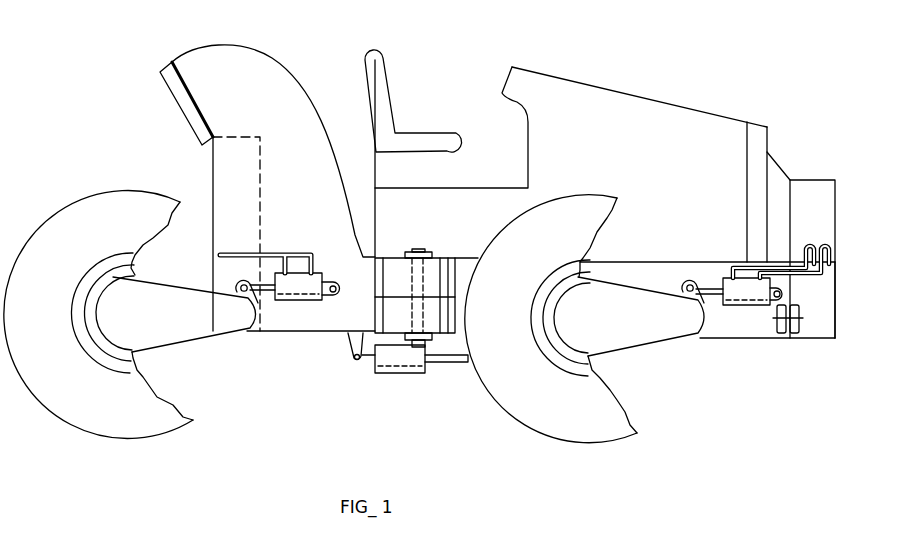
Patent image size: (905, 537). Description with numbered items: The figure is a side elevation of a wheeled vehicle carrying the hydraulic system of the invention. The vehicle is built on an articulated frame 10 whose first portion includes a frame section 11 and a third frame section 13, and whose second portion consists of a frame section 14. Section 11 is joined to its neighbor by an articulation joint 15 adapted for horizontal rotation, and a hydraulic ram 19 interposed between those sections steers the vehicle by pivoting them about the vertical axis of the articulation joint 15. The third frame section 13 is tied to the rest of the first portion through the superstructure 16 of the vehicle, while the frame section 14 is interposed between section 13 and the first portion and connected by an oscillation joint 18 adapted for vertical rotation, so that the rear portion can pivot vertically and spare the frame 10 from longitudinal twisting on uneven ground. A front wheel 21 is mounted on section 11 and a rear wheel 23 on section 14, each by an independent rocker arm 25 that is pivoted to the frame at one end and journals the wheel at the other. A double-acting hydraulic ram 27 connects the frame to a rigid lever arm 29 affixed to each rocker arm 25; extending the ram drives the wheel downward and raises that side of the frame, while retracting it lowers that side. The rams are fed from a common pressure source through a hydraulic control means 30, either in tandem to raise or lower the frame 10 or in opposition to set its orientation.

The articulated frame 10 is at (356, 374).
The frame section 11 is at (300, 335).
The third frame section 13 is at (817, 330).
The frame section 14 is at (705, 330).
The articulation joint 15 is at (407, 252).
The superstructure 16 is at (263, 68).
The oscillation joint 18 is at (772, 340).
The hydraulic ram 19 is at (418, 373).
The wheel 21 is at (170, 425).
The wheel 23 is at (613, 425).
The rocker arm 25 is at (188, 333).
The hydraulic ram 27 is at (310, 302).
The rigid lever arm 29 is at (240, 287).
The hydraulic control means 30 is at (218, 172).